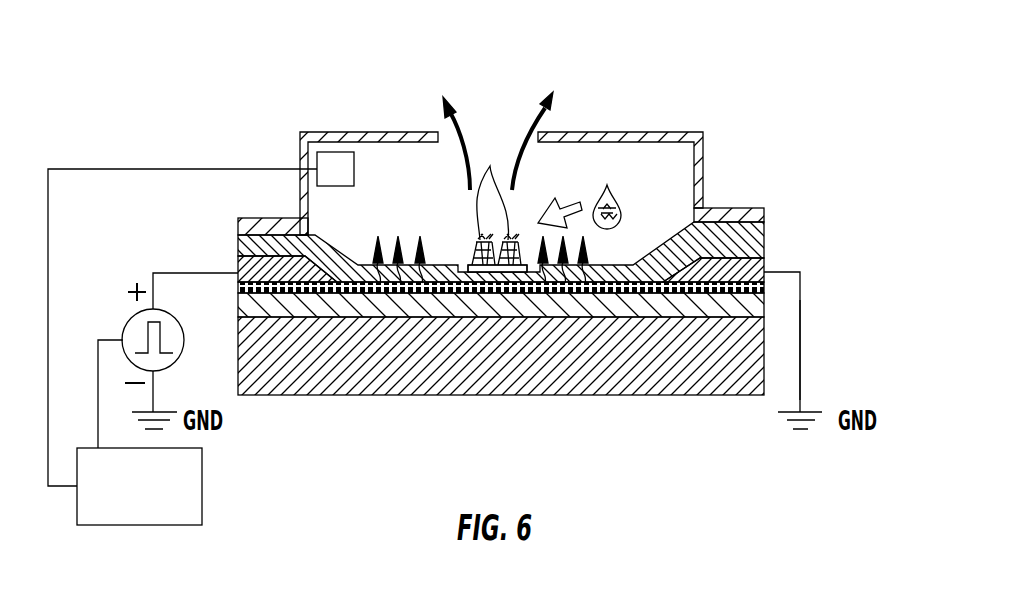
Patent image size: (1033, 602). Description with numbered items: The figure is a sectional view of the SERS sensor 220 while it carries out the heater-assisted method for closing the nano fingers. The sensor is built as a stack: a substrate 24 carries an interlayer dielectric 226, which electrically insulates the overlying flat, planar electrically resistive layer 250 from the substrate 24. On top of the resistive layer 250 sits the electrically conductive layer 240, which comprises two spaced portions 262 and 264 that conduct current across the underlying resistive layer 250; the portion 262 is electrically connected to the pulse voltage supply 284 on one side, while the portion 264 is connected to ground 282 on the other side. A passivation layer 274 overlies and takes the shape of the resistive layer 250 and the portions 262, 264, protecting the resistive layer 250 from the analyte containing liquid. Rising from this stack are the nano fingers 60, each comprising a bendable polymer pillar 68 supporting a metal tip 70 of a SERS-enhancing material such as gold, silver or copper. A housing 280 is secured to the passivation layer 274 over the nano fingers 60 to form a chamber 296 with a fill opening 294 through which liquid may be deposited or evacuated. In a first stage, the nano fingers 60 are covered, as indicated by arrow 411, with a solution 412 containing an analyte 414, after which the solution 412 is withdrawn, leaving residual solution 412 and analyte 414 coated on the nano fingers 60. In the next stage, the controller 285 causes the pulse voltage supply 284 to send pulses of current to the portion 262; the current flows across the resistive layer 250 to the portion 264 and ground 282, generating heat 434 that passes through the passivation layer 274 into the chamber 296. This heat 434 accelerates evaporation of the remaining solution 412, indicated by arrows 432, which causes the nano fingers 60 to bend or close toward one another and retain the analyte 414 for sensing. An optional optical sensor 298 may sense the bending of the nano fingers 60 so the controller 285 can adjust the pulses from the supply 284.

The SERS sensor 220 is at (733, 100).
The housing 280 is at (323, 133).
The optical sensor 298 is at (317, 162).
The chamber 296 is at (391, 172).
The fill opening 294 is at (446, 133).
The evaporation arrows 432 is at (521, 133).
The solution 412 is at (610, 186).
The analyte 414 is at (473, 186).
The covering arrow 411 is at (572, 207).
The passivation layer 274 is at (765, 240).
The portion of electrically conductive layer 264 is at (764, 265).
The portion of electrically conductive layer 262 is at (242, 260).
The heat 434 is at (373, 258).
The pillar 68 is at (468, 250).
The nano fingers 60 is at (464, 244).
The metal tip 70 is at (515, 240).
The pulse voltage supply 284 is at (128, 327).
The electrically conductive layer 240 is at (238, 281).
The electrically resistive layer 250 is at (351, 283).
The interlayer dielectric 226 is at (477, 317).
The substrate 24 is at (545, 395).
The ground 282 is at (802, 358).
The controller 285 is at (202, 473).